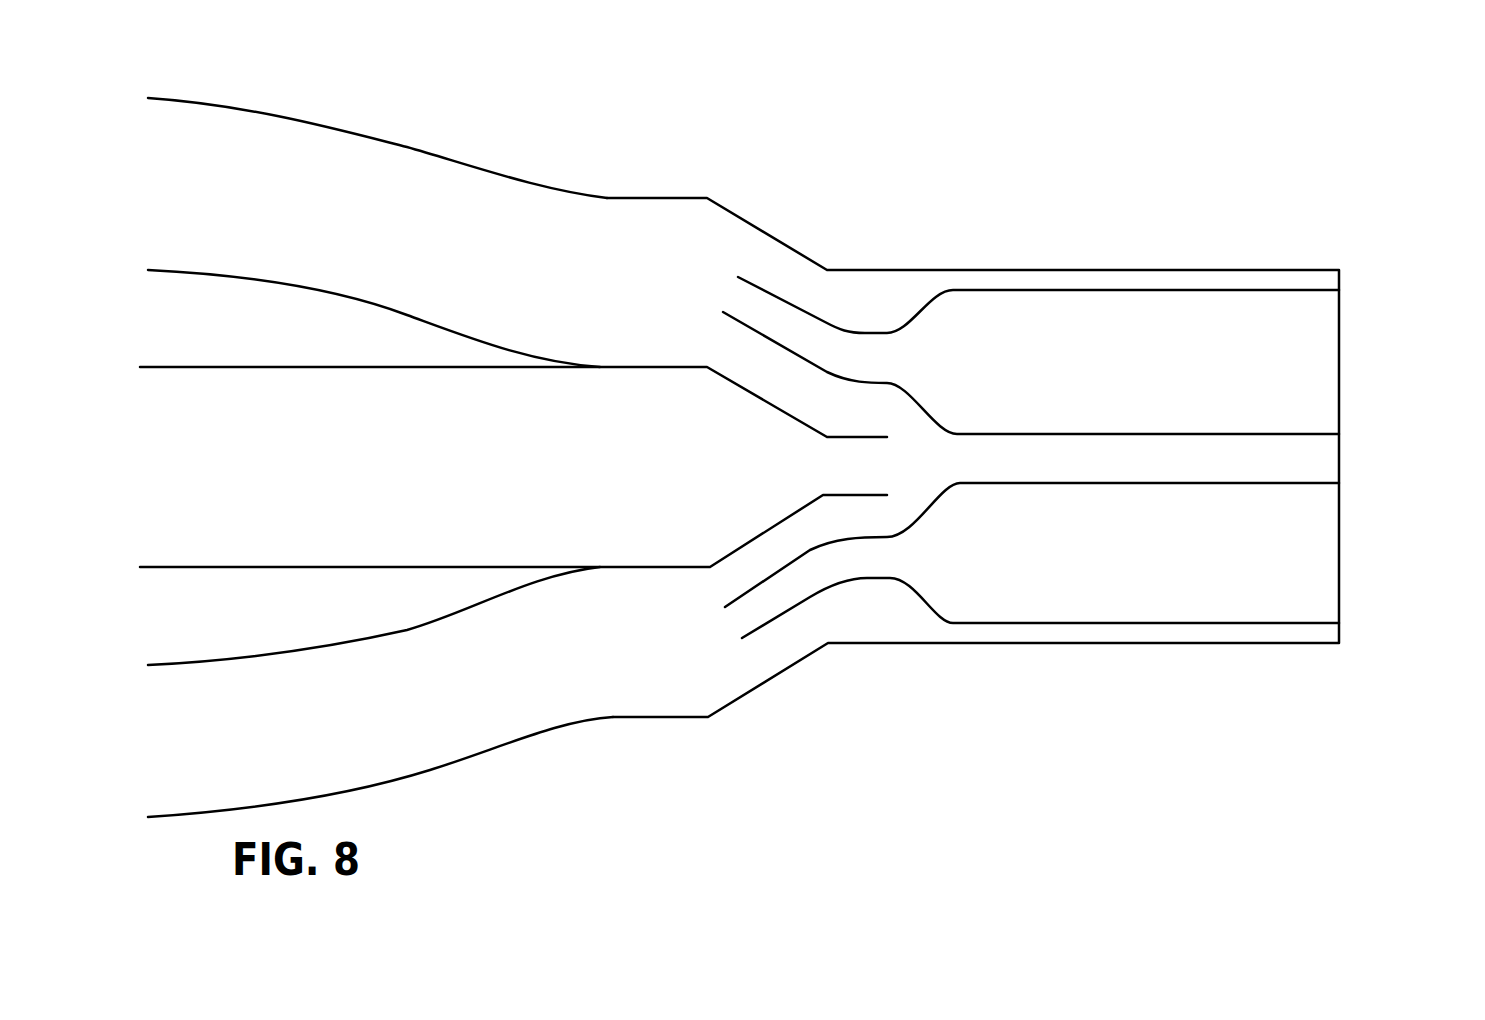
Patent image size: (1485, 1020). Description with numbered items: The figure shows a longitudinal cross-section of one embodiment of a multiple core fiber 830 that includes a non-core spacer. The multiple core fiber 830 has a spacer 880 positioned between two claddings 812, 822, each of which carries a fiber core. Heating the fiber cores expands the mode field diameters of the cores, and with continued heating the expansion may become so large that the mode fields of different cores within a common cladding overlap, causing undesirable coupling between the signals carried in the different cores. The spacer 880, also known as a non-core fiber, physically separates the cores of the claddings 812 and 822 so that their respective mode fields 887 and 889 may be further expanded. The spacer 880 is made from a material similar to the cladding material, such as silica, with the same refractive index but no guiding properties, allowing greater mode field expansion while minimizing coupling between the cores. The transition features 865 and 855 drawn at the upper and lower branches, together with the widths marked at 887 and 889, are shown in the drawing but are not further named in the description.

The multiple core fiber 830 is at (1295, 122).
The cladding 812 is at (377, 232).
The cladding 822 is at (380, 692).
The spacer 880 is at (288, 471).
The upper branch bend / taper 865 is at (742, 360).
The lower branch bend / taper 855 is at (818, 627).
The mode field 887 is at (1358, 289).
The mode field 889 is at (1358, 482).